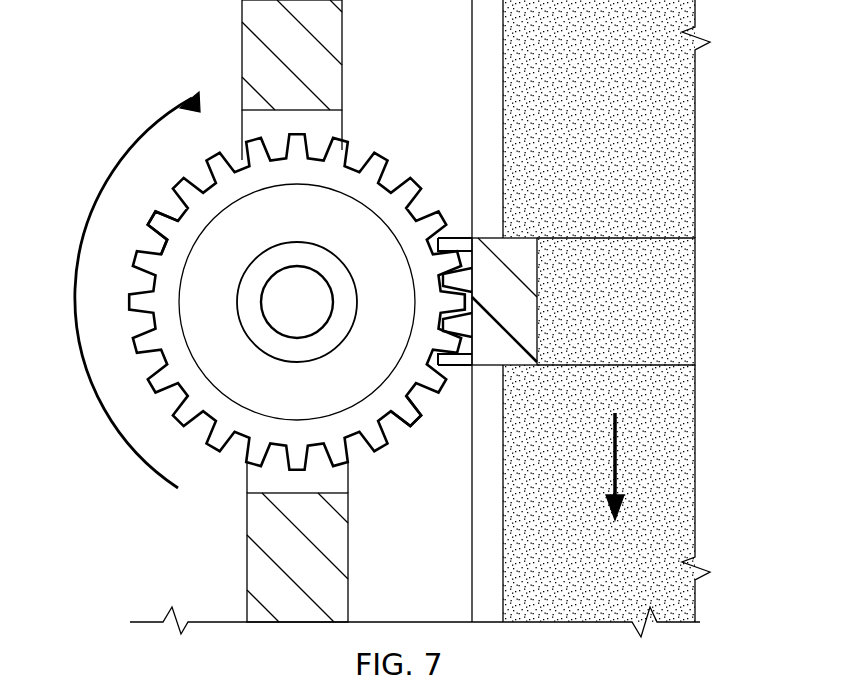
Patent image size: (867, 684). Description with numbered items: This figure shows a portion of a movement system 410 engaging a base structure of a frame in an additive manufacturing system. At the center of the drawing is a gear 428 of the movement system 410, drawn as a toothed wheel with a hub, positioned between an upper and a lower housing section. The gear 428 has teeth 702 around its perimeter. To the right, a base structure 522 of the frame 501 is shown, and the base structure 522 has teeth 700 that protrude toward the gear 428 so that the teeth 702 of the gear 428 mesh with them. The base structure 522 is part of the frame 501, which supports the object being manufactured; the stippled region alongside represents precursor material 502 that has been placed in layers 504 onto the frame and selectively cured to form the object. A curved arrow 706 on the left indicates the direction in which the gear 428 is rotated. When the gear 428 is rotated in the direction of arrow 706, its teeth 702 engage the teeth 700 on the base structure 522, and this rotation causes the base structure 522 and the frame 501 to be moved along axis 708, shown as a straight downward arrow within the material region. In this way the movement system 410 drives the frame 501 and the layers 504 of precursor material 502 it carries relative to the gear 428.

The movement system 410 is at (390, 135).
The gear 428 is at (140, 245).
The frame 501 is at (612, 232).
The precursor material 502 is at (688, 108).
The layers 504 is at (688, 178).
The base structure 522 is at (497, 247).
The teeth 700 is at (455, 385).
The teeth 702 is at (390, 468).
The arrow 706 is at (113, 163).
The axis 708 is at (618, 456).